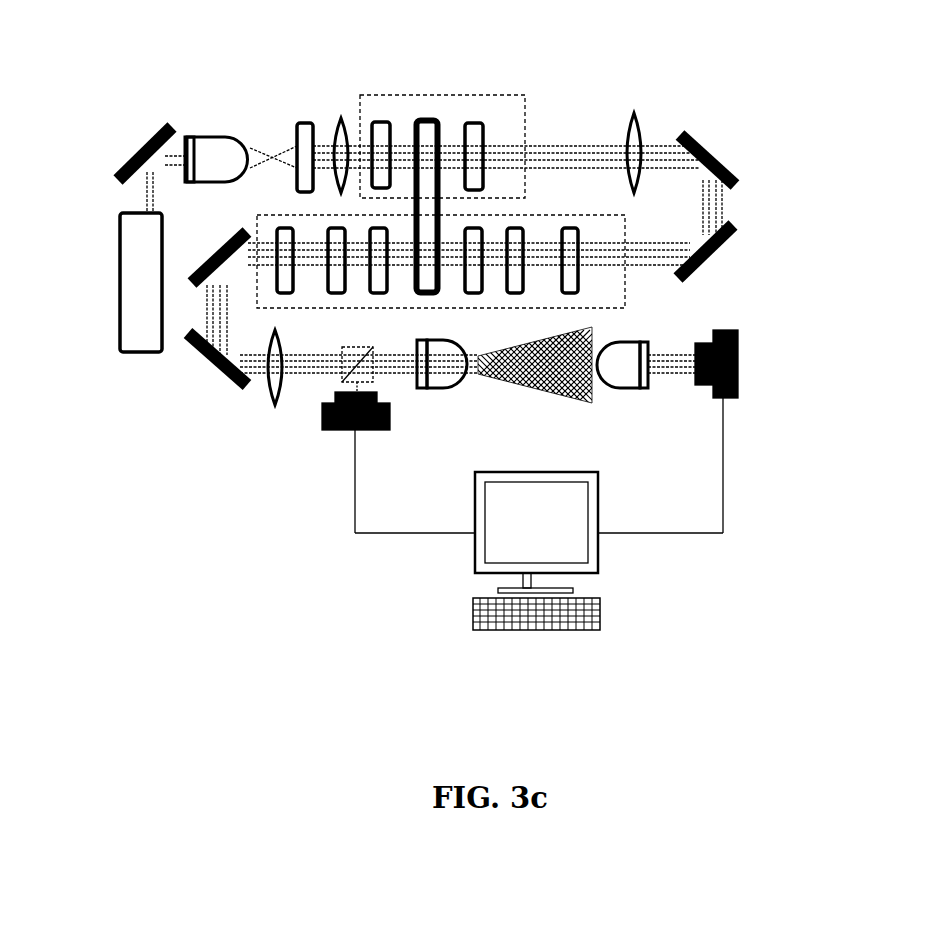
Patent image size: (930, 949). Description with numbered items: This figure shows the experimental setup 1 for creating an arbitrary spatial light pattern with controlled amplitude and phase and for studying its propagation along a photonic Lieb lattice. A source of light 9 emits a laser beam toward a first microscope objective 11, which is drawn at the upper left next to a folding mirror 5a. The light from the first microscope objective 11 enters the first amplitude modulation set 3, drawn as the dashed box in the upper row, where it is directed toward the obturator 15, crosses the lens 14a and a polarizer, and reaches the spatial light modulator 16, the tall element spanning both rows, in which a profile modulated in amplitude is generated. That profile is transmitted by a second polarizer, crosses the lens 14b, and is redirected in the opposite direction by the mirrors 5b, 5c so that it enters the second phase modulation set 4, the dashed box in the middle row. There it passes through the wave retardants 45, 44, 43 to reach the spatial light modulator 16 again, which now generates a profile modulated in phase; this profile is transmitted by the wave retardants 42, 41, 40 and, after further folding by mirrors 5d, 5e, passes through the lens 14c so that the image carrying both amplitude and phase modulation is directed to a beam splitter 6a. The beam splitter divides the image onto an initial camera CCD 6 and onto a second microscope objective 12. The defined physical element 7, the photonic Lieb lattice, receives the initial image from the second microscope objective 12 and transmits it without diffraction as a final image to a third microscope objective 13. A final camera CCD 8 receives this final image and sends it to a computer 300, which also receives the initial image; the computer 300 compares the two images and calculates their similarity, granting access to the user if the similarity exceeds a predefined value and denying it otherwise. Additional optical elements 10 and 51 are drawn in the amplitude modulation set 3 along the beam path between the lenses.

The setup 1 is at (188, 72).
The first amplitude modulation set 3 is at (397, 87).
The second phase modulation set 4 is at (553, 208).
The mirror 5a is at (145, 148).
The mirror 5b is at (706, 148).
The mirror 5c is at (718, 253).
The mirror 5d is at (218, 250).
The mirror 5e is at (210, 372).
The initial camera CCD 6 is at (327, 428).
The beam splitter 6a is at (342, 382).
The defined physical element 7 is at (537, 400).
The final camera CCD 8 is at (705, 385).
The source of light 9 is at (120, 272).
The optical element 10 is at (378, 120).
The first microscope objective 11 is at (220, 137).
The second microscope objective 12 is at (620, 385).
The third microscope objective 13 is at (437, 398).
The lens 14a is at (340, 120).
The lens 14b is at (637, 113).
The lens 14c is at (262, 400).
The obturator 15 is at (303, 118).
The spatial light modulator 16 is at (430, 117).
The wave retardant 40 is at (294, 257).
The wave retardant 41 is at (345, 259).
The wave retardant 42 is at (387, 258).
The wave retardant 43 is at (483, 259).
The wave retardant 44 is at (524, 258).
The wave retardant 45 is at (580, 258).
The optical plate 51 is at (478, 120).
The computer 300 is at (460, 547).